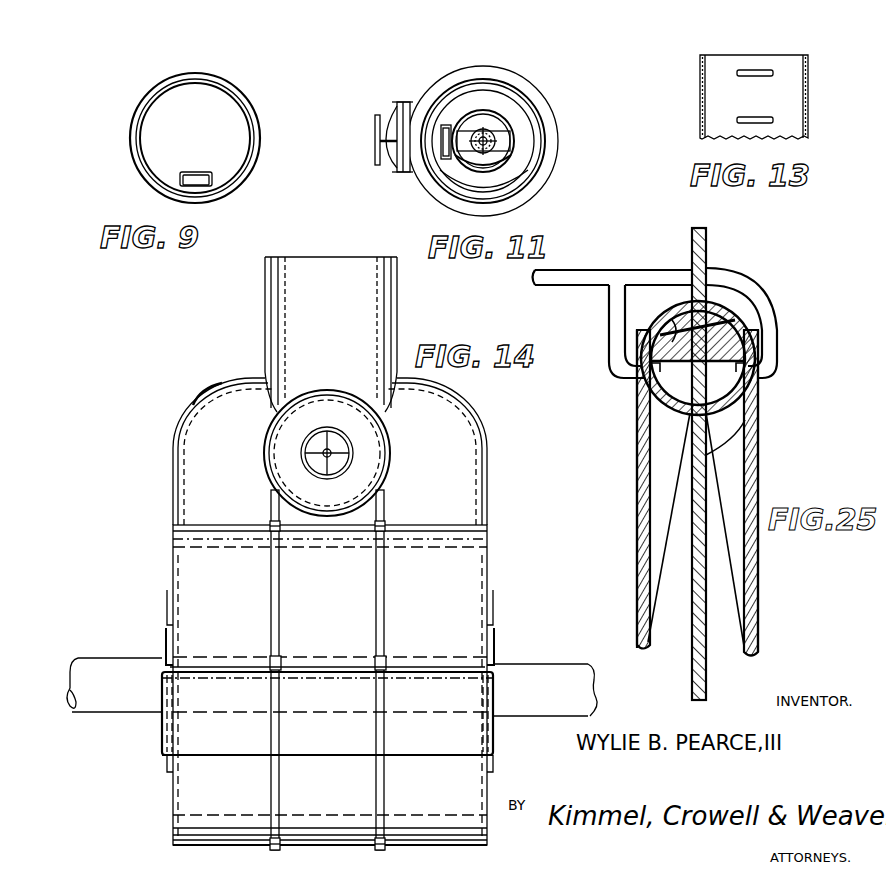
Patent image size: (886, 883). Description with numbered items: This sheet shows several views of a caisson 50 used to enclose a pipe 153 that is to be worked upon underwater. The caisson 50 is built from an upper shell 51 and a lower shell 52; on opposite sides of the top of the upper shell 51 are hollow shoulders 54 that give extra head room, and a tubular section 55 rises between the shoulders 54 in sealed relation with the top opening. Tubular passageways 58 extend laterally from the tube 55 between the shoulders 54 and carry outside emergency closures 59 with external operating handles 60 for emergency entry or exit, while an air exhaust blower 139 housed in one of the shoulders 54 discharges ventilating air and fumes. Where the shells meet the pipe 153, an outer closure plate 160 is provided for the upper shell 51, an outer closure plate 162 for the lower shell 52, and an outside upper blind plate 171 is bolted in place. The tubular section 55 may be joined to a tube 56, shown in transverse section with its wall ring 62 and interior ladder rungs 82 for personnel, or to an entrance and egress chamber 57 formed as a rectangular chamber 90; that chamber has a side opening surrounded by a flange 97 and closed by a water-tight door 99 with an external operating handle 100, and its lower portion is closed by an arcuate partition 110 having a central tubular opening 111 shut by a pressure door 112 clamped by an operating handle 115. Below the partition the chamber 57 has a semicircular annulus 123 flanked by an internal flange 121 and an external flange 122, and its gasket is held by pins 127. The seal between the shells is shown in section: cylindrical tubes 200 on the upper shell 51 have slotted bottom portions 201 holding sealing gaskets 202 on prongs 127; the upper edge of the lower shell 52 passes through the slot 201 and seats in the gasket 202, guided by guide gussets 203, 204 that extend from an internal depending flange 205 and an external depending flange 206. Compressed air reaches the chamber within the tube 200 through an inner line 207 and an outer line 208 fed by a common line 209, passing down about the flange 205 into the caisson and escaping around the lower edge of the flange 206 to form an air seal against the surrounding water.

In FIG. 14, the caisson 50 is at (170, 517).
In FIG. 14, the upper shell 51 is at (170, 560).
In FIG. 25, the upper shell 51 is at (710, 240).
In FIG. 14, the lower shell 52 is at (170, 794).
In FIG. 25, the lower shell 52 is at (745, 445).
In FIG. 14, the shoulders 54 is at (196, 402).
In FIG. 14, the tubular section 55 is at (275, 322).
In FIG. 9, the tube 56 is at (178, 94).
In FIG. 13, the tube 56 is at (808, 92).
In FIG. 11, the entrance and egress chamber 57 is at (448, 72).
In FIG. 14, the tubular passageways 58 is at (330, 398).
In FIG. 14, the outside emergency closures 59 is at (290, 430).
In FIG. 14, the external operating handles 60 is at (355, 440).
In FIG. 9, the ring 62 is at (136, 118).
In FIG. 9, the ladder rungs 82 is at (204, 170).
In FIG. 11, the ladder rungs 82 is at (445, 112).
In FIG. 13, the ladder rungs 82 is at (757, 78).
In FIG. 11, the rectangular chamber 90 is at (486, 70).
In FIG. 11, the flange 97 is at (402, 104).
In FIG. 11, the water-tight door 99 is at (374, 124).
In FIG. 11, the external operating handle 100 is at (376, 150).
In FIG. 11, the arcuate partition 110 is at (488, 98).
In FIG. 11, the tubular opening 111 is at (500, 112).
In FIG. 11, the pressure door 112 is at (512, 140).
In FIG. 11, the operating handle 115 is at (497, 134).
In FIG. 11, the internal flange 121 is at (515, 158).
In FIG. 11, the external flange 122 is at (528, 194).
In FIG. 11, the semicircular annulus 123 is at (438, 176).
In FIG. 25, the pins 127 is at (680, 318).
In FIG. 14, the air exhaust blower 139 is at (196, 384).
In FIG. 14, the pipe 153 is at (98, 658).
In FIG. 14, the outer closure plate 160 is at (164, 600).
In FIG. 14, the outer closure plate 162 is at (166, 760).
In FIG. 14, the outside upper blind plate 171 is at (166, 636).
In FIG. 14, the cylindrical tubes 200 is at (310, 670).
In FIG. 25, the cylindrical tubes 200 is at (720, 318).
In FIG. 25, the slotted bottom portions 201 is at (685, 414).
In FIG. 25, the sealing gaskets 202 is at (740, 330).
In FIG. 25, the guide gusset 203 is at (652, 452).
In FIG. 25, the guide gusset 204 is at (745, 456).
In FIG. 25, the internal depending flange 205 is at (638, 512).
In FIG. 14, the external depending flange 206 is at (322, 735).
In FIG. 25, the external depending flange 206 is at (760, 482).
In FIG. 25, the inner air line 207 is at (612, 372).
In FIG. 25, the outer air line 208 is at (778, 352).
In FIG. 25, the common line 209 is at (594, 272).